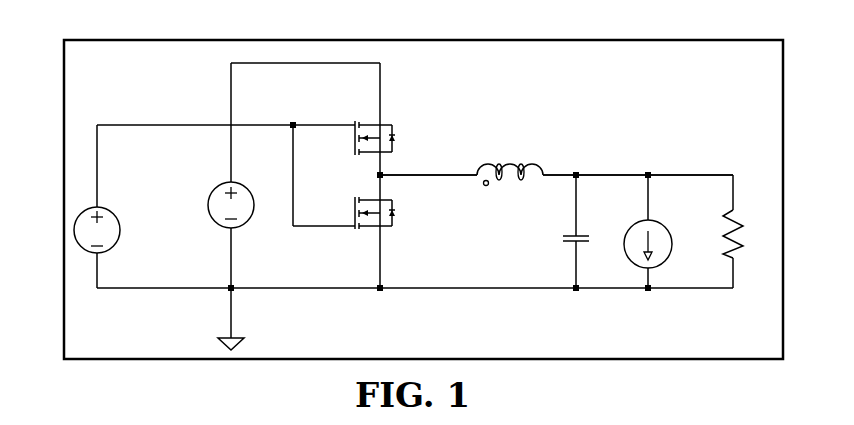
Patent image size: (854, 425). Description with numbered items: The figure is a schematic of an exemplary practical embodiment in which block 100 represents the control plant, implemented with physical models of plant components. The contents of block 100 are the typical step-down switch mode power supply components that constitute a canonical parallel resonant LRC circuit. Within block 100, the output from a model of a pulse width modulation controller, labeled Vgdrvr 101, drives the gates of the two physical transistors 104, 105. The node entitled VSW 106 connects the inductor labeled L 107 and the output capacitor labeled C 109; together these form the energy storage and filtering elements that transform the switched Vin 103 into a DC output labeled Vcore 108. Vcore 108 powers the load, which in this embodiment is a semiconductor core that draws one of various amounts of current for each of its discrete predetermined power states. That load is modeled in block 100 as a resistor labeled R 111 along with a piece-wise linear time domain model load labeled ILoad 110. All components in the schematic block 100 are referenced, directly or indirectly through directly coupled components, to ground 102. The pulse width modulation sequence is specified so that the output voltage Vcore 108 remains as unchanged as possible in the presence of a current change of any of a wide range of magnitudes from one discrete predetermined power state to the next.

The block 100 is at (65, 41).
The Vgdrvr 101 is at (101, 206).
The ground 102 is at (243, 340).
The Vin 103 is at (229, 181).
The physical transistor 104 is at (370, 122).
The physical transistor 105 is at (362, 196).
The VSW node 106 is at (446, 177).
The inductor L 107 is at (512, 158).
The Vcore 108 is at (643, 165).
The output capacitor C 109 is at (590, 237).
The ILoad 110 is at (653, 218).
The resistor R 111 is at (738, 214).